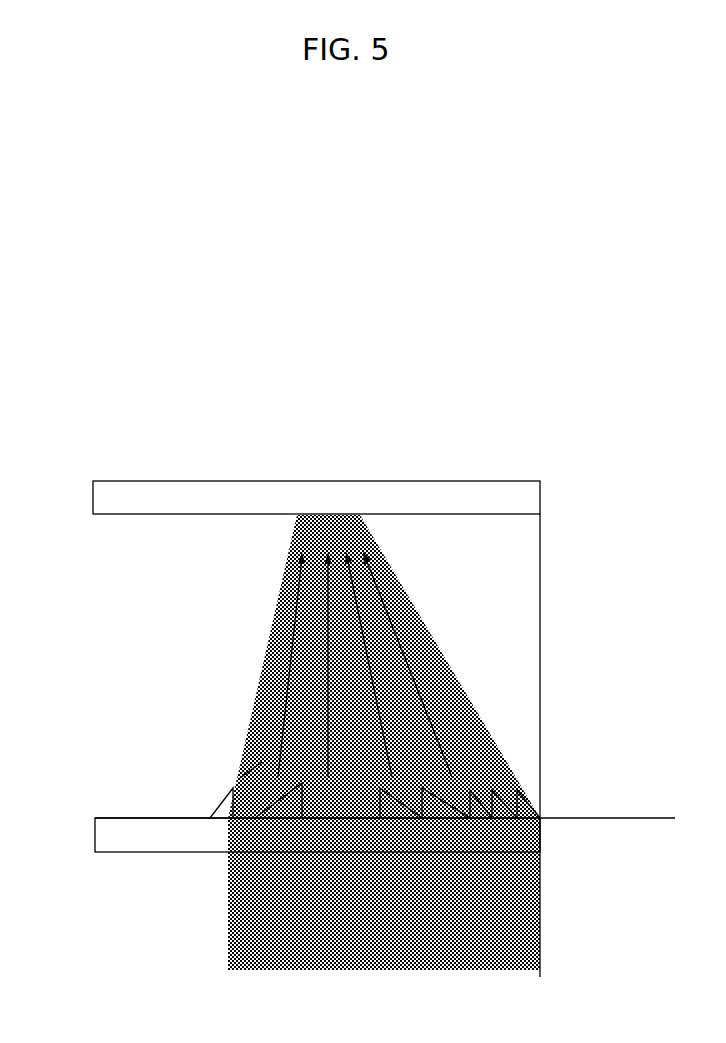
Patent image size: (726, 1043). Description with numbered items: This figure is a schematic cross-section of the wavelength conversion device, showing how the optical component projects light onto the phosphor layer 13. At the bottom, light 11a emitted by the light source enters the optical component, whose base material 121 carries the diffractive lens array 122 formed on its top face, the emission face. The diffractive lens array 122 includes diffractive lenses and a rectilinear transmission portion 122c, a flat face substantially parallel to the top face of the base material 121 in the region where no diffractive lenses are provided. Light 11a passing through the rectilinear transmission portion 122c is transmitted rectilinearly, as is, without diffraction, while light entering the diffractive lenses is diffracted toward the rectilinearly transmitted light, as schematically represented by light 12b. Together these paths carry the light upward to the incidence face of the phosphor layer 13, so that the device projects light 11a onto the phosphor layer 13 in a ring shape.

The phosphor layer 13 is at (540, 498).
The light 12b is at (285, 575).
The rectilinear transmission portion 122c is at (250, 768).
The diffractive lens array 122 is at (104, 793).
The base material 121 is at (117, 838).
The light 11a is at (540, 917).